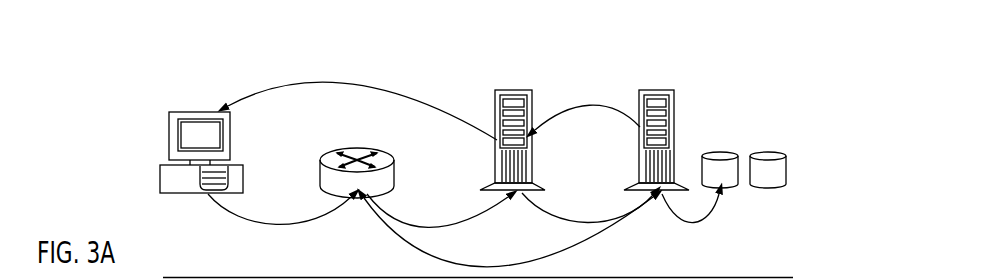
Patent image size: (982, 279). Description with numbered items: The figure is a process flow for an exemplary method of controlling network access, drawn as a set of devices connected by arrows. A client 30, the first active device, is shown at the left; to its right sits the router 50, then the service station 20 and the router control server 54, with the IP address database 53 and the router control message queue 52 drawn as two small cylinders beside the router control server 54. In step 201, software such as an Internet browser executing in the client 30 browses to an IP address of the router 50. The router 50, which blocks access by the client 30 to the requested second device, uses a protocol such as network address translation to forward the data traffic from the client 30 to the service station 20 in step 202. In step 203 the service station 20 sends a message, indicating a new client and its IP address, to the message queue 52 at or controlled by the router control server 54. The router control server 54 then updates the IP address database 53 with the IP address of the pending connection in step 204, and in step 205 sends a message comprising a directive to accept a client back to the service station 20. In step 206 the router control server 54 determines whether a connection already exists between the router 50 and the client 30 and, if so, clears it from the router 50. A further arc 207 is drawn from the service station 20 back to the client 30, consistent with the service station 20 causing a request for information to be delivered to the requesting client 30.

The client 30 is at (165, 140).
The router 50 is at (383, 147).
The service station 20 is at (535, 129).
The router control server 54 is at (675, 108).
The IP address database 53 is at (723, 152).
The router control message queue 52 is at (765, 152).
The step 201 is at (250, 229).
The step 202 is at (463, 223).
The step 203 is at (565, 218).
The step 204 is at (700, 219).
The step 205 is at (596, 109).
The step 206 is at (428, 240).
The service station to client link 207 is at (365, 82).